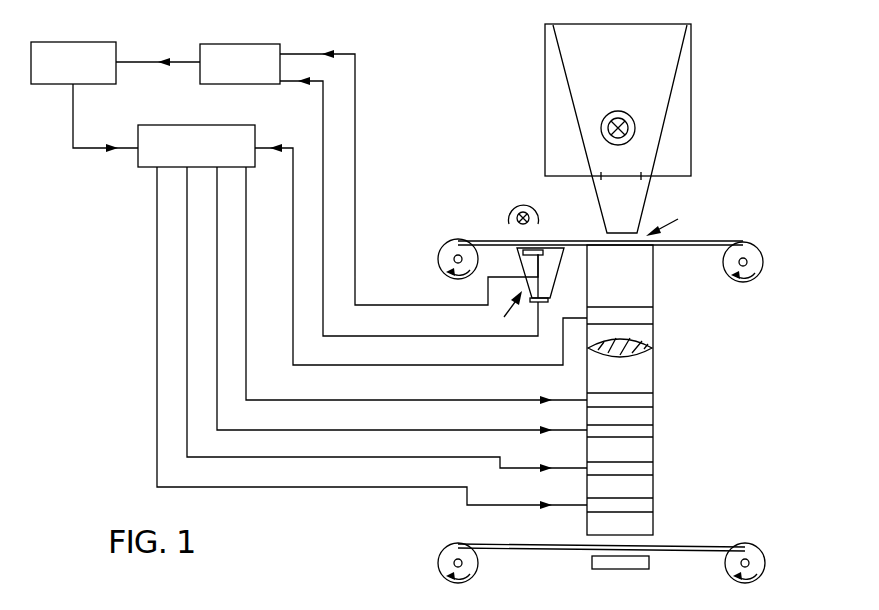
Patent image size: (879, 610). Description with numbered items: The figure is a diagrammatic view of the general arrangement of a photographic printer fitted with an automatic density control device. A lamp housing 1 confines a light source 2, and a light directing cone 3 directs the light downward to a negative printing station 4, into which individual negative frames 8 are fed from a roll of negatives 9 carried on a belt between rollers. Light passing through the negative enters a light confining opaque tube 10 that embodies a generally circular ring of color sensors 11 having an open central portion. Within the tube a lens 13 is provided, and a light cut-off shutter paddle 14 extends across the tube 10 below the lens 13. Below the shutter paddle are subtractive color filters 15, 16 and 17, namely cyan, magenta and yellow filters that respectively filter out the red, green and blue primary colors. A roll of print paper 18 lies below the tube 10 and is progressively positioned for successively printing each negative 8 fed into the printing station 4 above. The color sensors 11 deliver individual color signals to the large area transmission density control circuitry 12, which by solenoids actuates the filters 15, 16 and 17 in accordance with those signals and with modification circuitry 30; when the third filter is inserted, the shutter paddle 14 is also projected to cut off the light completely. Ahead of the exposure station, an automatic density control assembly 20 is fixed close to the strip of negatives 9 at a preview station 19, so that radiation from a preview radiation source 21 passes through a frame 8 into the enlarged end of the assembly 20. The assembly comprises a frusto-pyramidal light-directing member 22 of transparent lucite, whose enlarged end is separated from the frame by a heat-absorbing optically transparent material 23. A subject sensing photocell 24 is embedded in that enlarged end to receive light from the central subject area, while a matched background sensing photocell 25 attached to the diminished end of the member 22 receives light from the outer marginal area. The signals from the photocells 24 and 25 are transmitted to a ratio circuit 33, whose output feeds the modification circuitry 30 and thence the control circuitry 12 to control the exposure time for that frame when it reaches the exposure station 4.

The lamp housing 1 is at (683, 50).
The light source 2 is at (632, 128).
The light directing cone 3 is at (646, 201).
The negative printing station 4 is at (671, 221).
The negative frame 8 is at (721, 241).
The roll of negatives 9 is at (752, 253).
The light confining opaque tube 10 is at (650, 289).
The ring of color sensors 11 is at (650, 316).
The LATD control circuitry 12 is at (210, 128).
The lens 13 is at (637, 358).
The shutter paddle 14 is at (655, 400).
The cyan subtractive color filter 15 is at (655, 431).
The magenta subtractive color filter 16 is at (655, 470).
The yellow subtractive color filter 17 is at (655, 508).
The roll of print paper 18 is at (706, 545).
The preview station 19 is at (528, 237).
The automatic density control assembly 20 is at (498, 313).
The preview radiation source 21 is at (521, 203).
The frusto-pyramidal light-directing member 22 is at (551, 272).
The heat-absorbing optically transparent material 23 is at (582, 229).
The subject sensing photocell 24 is at (519, 273).
The background sensing photocell 25 is at (557, 300).
The modification circuitry 30 is at (80, 48).
The ratio circuit 33 is at (226, 46).